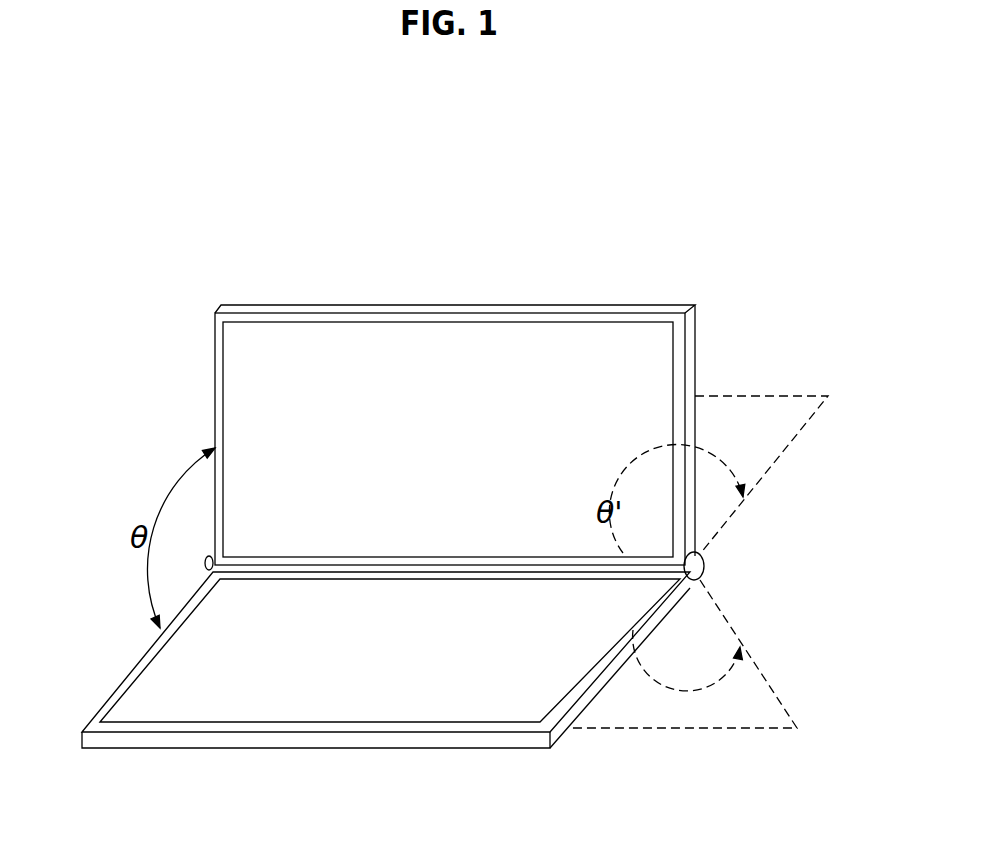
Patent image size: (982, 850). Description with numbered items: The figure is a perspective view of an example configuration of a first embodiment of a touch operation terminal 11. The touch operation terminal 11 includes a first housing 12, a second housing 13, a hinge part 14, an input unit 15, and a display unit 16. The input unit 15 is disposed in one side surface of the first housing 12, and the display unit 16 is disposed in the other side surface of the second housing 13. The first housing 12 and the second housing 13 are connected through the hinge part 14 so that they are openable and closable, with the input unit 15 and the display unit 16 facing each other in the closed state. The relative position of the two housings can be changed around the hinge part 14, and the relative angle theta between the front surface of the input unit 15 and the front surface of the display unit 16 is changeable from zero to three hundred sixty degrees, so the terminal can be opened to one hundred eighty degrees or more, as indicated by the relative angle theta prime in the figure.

The touch operation terminal 11 is at (240, 170).
The first housing 12 is at (245, 742).
The second housing 13 is at (381, 306).
The hinge part 14 is at (704, 566).
The input unit 15 is at (422, 693).
The display unit 16 is at (510, 362).